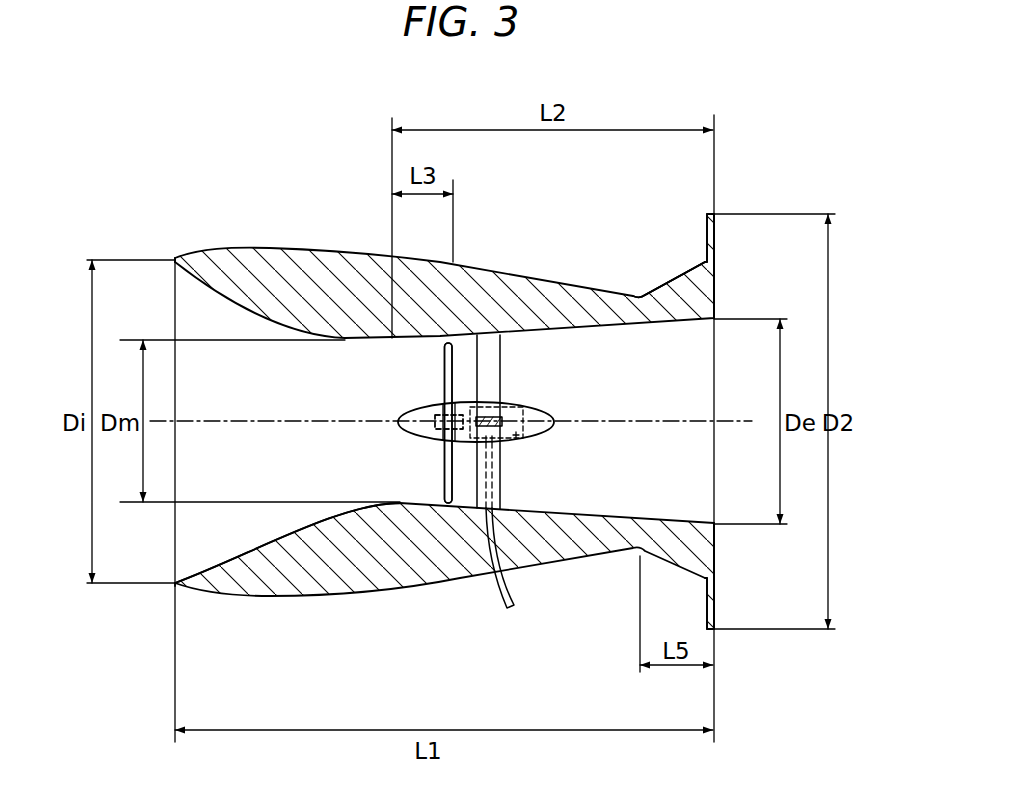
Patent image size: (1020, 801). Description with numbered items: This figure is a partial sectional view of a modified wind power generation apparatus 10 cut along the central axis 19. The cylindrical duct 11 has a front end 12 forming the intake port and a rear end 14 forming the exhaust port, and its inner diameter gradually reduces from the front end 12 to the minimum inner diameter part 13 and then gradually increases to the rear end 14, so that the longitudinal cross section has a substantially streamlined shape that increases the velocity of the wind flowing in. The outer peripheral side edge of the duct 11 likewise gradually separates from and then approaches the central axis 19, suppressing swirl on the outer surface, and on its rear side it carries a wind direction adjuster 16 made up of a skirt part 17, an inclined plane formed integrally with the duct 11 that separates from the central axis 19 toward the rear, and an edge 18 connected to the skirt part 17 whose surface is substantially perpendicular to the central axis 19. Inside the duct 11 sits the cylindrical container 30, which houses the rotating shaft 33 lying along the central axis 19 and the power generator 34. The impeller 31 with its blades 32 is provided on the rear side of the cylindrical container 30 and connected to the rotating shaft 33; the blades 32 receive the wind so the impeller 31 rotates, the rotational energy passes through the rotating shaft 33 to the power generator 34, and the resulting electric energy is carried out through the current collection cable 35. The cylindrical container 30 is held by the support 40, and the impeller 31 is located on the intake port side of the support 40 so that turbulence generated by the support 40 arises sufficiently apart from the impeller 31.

The wind power generation apparatus 10 is at (439, 424).
The duct 11 is at (216, 584).
The front end 12 is at (168, 251).
The minimum inner diameter part 13 is at (395, 520).
The rear end 14 is at (730, 532).
The wind direction adjuster 16 is at (630, 203).
The skirt part 17 is at (656, 279).
The edge 18 is at (700, 222).
The central axis 19 is at (735, 421).
The cylindrical container 30 is at (546, 442).
The impeller 31 is at (440, 398).
The blades 32 is at (444, 346).
The rotating shaft 33 is at (461, 432).
The power generator 34 is at (523, 440).
The current collection cable 35 is at (510, 607).
The support 40 is at (487, 347).